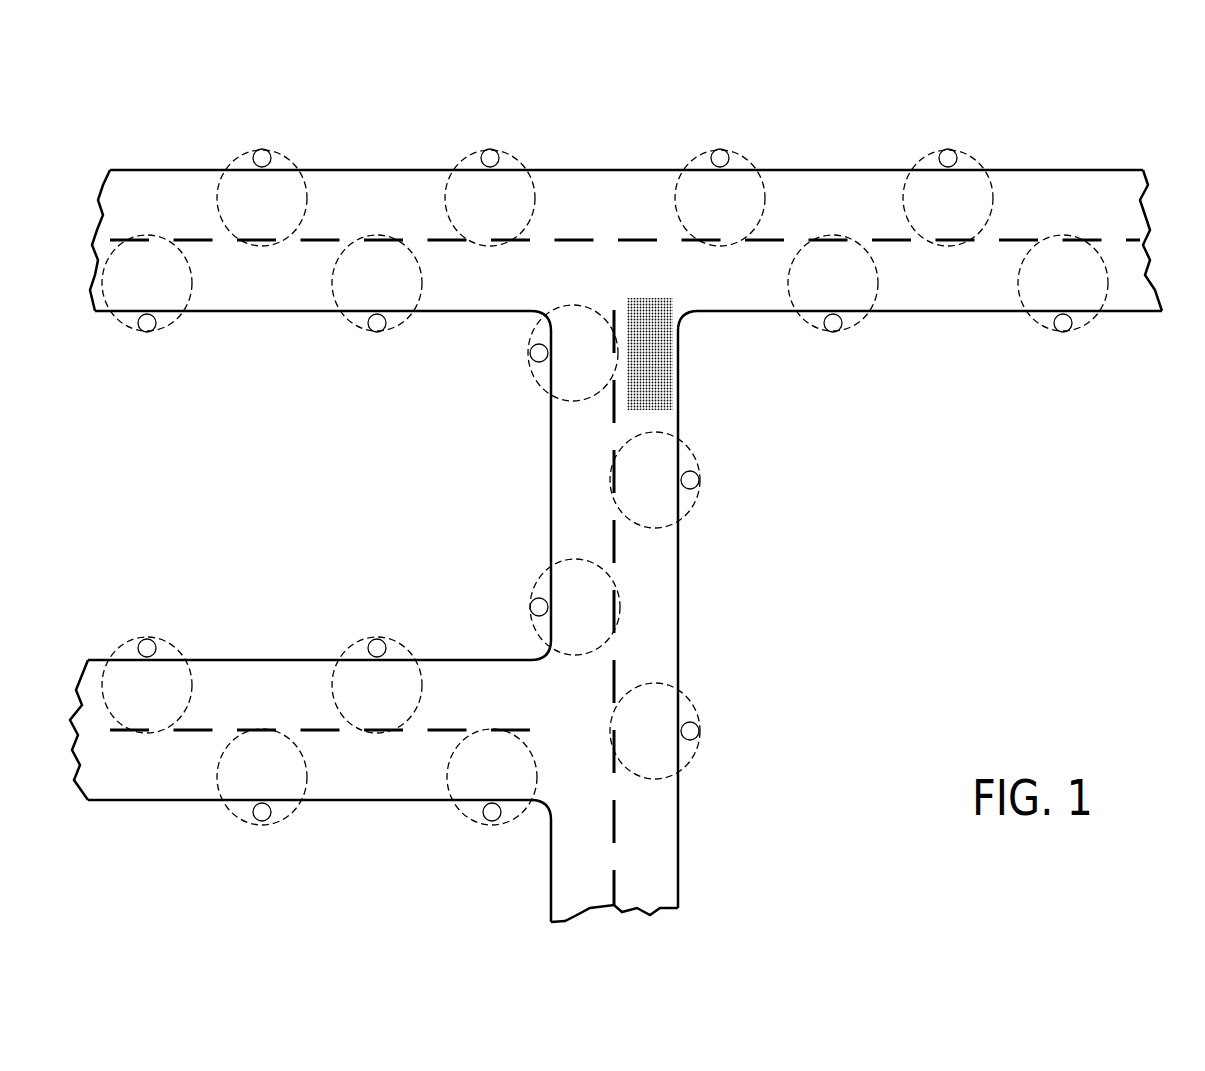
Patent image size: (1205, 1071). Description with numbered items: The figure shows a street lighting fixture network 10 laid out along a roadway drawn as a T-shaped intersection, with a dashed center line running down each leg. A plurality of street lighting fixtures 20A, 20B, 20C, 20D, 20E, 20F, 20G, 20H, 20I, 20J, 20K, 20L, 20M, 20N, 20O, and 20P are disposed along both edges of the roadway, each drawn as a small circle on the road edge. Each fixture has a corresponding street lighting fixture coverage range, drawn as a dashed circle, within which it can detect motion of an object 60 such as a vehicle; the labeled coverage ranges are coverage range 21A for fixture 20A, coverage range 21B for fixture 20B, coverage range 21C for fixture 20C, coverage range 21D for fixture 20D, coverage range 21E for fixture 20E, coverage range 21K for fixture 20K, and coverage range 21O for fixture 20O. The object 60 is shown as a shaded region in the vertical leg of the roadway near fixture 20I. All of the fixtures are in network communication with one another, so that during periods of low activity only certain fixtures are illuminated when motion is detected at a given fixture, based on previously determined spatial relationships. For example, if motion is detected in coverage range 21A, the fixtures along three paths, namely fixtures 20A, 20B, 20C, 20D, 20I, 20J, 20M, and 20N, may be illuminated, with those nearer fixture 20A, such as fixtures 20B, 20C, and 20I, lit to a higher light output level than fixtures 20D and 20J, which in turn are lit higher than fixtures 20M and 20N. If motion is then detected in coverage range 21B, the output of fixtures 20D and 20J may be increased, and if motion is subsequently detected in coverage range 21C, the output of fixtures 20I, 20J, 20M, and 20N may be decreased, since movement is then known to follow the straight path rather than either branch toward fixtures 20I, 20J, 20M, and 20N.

The street lighting fixture network 10 is at (1062, 80).
The object 60 is at (665, 357).
The street lighting fixture 20A is at (940, 151).
The street lighting fixture 20B is at (712, 151).
The street lighting fixture 20C is at (482, 151).
The street lighting fixture 20D is at (254, 151).
The street lighting fixture 20E is at (141, 331).
The street lighting fixture 20F is at (371, 331).
The street lighting fixture 20G is at (827, 331).
The street lighting fixture 20H is at (1057, 331).
The street lighting fixture 20I is at (530, 356).
The street lighting fixture 20J is at (530, 605).
The street lighting fixture 20K is at (699, 733).
The street lighting fixture 20L is at (699, 482).
The street lighting fixture 20M is at (373, 640).
The street lighting fixture 20N is at (143, 640).
The street lighting fixture 20O is at (257, 821).
The street lighting fixture 20P is at (487, 821).
The street lighting fixture coverage range 21A is at (979, 158).
The street lighting fixture coverage range 21B is at (751, 158).
The street lighting fixture coverage range 21C is at (521, 158).
The street lighting fixture coverage range 21D is at (293, 158).
The street lighting fixture coverage range 21E is at (181, 318).
The street lighting fixture coverage range 21K is at (658, 684).
The street lighting fixture coverage range 21O is at (216, 783).